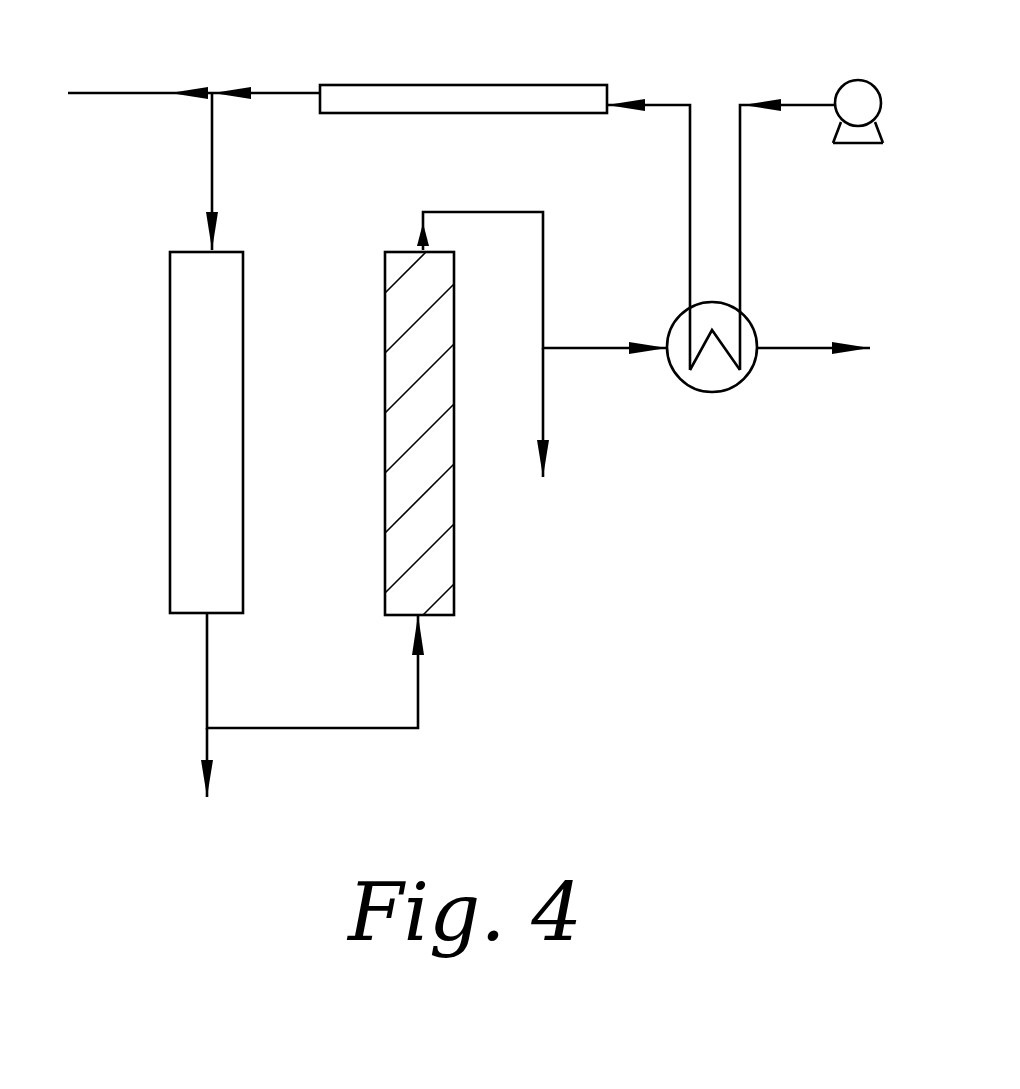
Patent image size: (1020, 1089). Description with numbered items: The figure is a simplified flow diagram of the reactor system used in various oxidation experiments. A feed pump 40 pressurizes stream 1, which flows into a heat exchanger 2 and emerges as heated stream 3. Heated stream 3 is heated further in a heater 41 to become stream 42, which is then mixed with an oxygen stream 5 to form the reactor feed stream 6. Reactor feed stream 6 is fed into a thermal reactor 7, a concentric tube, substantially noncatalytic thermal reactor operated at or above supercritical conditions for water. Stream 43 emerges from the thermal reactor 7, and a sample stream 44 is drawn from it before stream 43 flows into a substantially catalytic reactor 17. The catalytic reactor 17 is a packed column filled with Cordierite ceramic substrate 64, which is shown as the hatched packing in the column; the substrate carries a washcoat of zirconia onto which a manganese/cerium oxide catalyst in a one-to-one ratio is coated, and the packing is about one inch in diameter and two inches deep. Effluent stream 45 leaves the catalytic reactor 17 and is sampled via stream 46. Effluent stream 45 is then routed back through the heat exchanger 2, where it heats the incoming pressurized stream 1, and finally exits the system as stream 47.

The stream 1 is at (787, 213).
The heat exchanger 2 is at (719, 392).
The heated stream 3 is at (648, 213).
The oxygen stream 5 is at (140, 74).
The reactor feed stream 6 is at (224, 171).
The thermal reactor 7 is at (170, 440).
The substantially catalytic reactor 17 is at (385, 440).
The feed pump 40 is at (858, 105).
The heater 41 is at (463, 78).
The stream 42 is at (266, 74).
The stream 43 is at (315, 670).
The sample stream 44 is at (230, 762).
The effluent stream 45 is at (542, 261).
The stream 46 is at (543, 434).
The stream 47 is at (815, 328).
The Cordierite ceramic substrate 64 is at (443, 547).